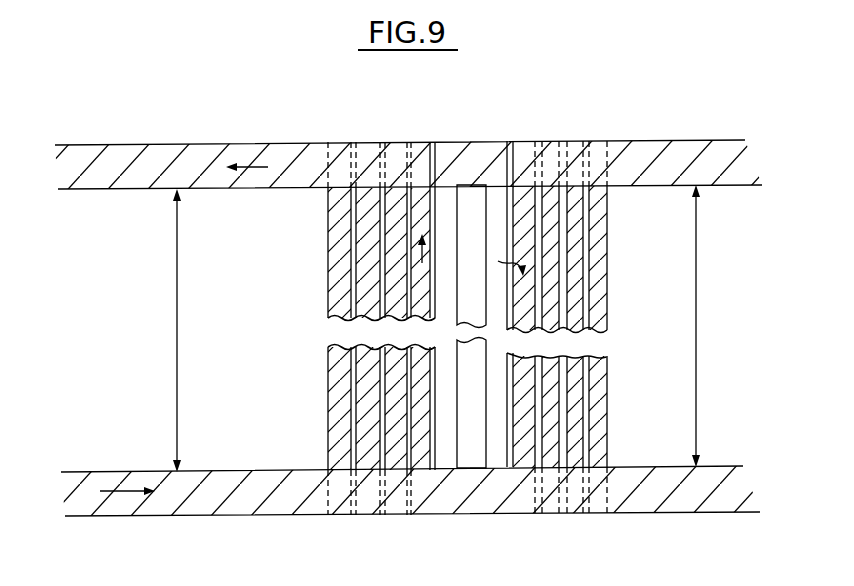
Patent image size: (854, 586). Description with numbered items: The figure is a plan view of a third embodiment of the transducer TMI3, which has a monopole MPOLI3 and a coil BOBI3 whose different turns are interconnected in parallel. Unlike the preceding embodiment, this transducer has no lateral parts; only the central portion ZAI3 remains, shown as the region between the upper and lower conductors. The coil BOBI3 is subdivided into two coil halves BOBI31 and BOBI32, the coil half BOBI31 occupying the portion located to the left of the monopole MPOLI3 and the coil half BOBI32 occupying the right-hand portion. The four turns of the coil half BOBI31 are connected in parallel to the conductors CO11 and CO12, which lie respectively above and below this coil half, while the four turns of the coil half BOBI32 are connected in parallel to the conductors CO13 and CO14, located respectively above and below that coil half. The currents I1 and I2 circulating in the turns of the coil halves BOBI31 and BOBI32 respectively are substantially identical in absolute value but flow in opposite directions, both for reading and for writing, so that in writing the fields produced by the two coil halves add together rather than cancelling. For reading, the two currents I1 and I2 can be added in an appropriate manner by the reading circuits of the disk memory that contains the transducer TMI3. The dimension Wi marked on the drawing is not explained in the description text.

The conductor CO11 is at (98, 145).
The conductor CO12 is at (180, 492).
The conductor CO13 is at (668, 155).
The conductor CO14 is at (635, 514).
The transducer TMI3 is at (445, 133).
The coil BOBI3 is at (495, 134).
The coil half BOBI31 is at (330, 306).
The coil half BOBI32 is at (607, 287).
The monopole MPOLI3 is at (470, 470).
The central portion ZAI3 is at (136, 330).
The width of the inter-conductor gap Wi is at (681, 326).
The current I1 is at (424, 258).
The current I2 is at (506, 256).